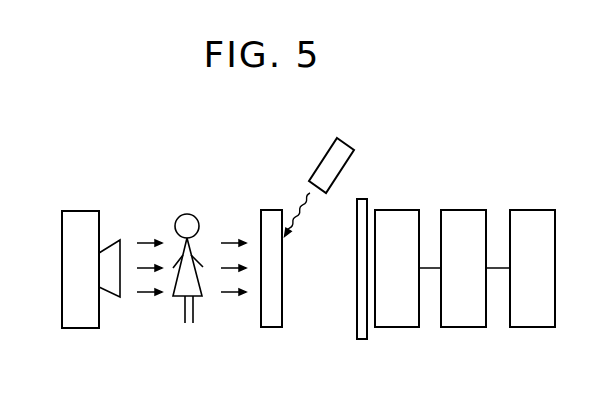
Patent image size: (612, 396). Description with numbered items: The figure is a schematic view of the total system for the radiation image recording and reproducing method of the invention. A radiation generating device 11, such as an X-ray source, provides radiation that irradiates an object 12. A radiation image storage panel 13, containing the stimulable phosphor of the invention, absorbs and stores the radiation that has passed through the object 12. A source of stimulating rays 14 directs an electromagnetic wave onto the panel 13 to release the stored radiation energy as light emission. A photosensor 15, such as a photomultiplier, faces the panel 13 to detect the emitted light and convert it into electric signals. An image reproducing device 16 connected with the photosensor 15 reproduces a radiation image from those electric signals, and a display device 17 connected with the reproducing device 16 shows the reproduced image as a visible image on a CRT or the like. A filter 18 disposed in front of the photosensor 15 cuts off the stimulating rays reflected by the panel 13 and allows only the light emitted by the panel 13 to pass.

The radiation generating device 11 is at (80, 328).
The object 12 is at (185, 318).
The radiation image storage panel 13 is at (272, 327).
The source of stimulating rays 14 is at (352, 157).
The photosensor 15 is at (398, 327).
The image reproducing device 16 is at (467, 327).
The display device 17 is at (533, 327).
The filter 18 is at (357, 332).